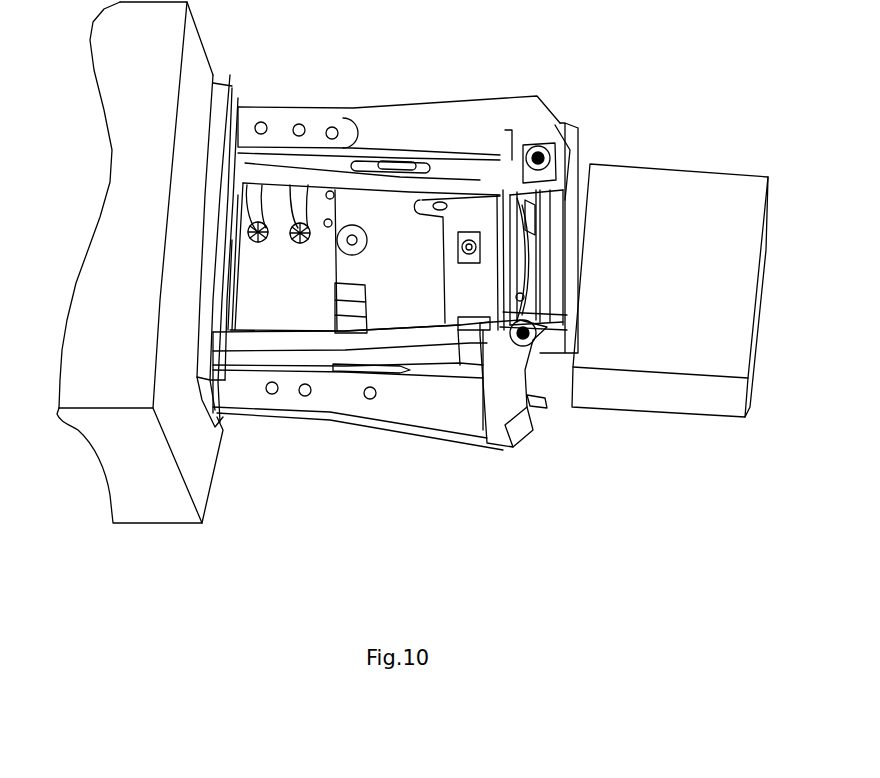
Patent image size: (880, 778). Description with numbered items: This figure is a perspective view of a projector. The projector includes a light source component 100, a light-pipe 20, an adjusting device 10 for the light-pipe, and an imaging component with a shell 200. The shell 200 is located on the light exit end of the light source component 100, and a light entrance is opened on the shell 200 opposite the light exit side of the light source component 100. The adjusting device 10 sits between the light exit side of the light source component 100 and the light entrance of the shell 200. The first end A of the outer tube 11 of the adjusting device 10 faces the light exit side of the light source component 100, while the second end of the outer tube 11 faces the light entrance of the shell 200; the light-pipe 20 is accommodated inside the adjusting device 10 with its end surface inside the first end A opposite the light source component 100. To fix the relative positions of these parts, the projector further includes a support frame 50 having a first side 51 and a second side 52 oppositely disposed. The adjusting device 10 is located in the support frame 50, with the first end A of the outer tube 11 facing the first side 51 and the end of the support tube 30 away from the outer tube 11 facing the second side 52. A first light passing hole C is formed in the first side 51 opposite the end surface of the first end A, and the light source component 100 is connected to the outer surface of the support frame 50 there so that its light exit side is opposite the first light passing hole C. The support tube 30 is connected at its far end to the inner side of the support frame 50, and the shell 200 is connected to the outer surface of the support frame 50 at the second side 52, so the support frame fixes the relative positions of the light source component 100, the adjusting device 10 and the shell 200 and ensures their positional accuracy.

The adjusting device 10 is at (397, 456).
The outer tube 11 is at (415, 302).
The light-pipe 20 is at (497, 280).
The support tube 30 is at (232, 235).
The support frame 50 is at (398, 130).
The first side 51 is at (570, 222).
The second side 52 is at (219, 158).
The light source component 100 is at (667, 332).
The shell 200 is at (135, 470).
The first end A is at (511, 280).
The first light passing hole C is at (530, 257).